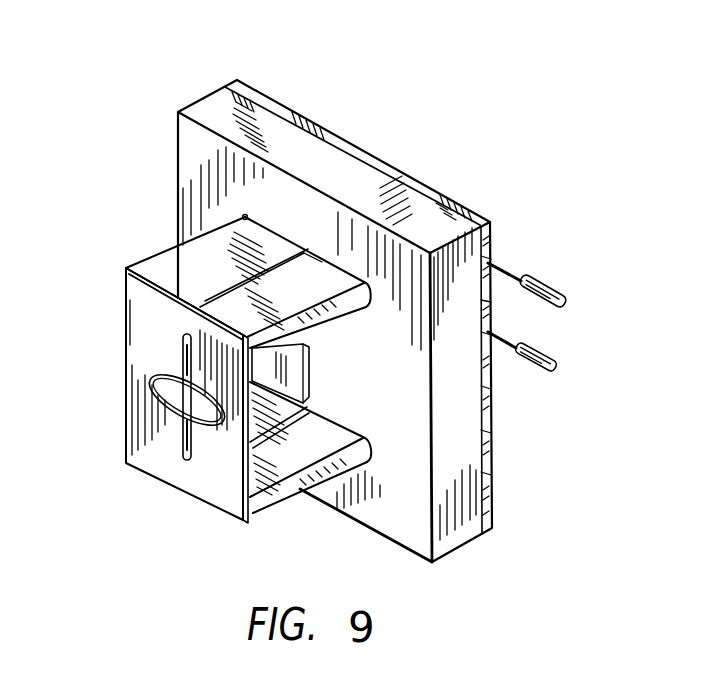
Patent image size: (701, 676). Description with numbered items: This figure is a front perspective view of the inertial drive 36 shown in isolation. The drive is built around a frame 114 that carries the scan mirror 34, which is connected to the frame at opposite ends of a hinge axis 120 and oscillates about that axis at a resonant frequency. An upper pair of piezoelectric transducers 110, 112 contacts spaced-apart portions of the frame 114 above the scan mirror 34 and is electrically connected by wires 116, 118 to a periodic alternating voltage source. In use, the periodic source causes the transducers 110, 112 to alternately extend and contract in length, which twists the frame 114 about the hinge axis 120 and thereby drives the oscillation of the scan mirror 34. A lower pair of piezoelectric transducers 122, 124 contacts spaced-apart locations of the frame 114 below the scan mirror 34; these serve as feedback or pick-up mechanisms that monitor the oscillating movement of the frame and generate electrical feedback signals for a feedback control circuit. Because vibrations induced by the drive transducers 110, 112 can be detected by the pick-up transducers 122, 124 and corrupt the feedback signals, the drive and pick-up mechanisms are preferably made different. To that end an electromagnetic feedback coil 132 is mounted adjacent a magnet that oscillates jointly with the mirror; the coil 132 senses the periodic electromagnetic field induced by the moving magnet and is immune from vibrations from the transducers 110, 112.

The inertial drive 36 is at (172, 86).
The piezoelectric transducer 110 is at (180, 262).
The piezoelectric transducer 112 is at (340, 290).
The frame 114 is at (133, 322).
The wire 116 is at (549, 287).
The wire 118 is at (542, 367).
The hinge axis 120 is at (184, 466).
The piezoelectric transducer 122 is at (242, 503).
The piezoelectric transducer 124 is at (289, 472).
The electromagnetic feedback coil 132 is at (307, 380).
The scan mirror 34 is at (166, 418).